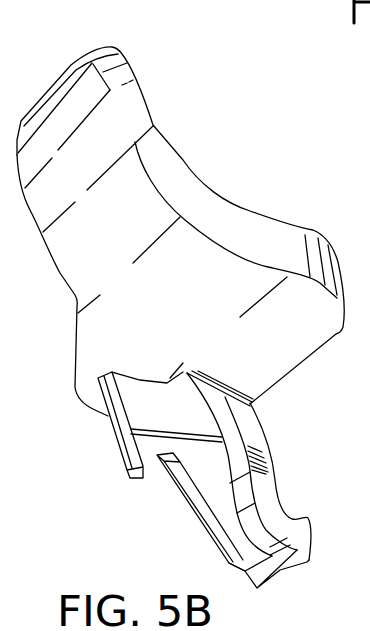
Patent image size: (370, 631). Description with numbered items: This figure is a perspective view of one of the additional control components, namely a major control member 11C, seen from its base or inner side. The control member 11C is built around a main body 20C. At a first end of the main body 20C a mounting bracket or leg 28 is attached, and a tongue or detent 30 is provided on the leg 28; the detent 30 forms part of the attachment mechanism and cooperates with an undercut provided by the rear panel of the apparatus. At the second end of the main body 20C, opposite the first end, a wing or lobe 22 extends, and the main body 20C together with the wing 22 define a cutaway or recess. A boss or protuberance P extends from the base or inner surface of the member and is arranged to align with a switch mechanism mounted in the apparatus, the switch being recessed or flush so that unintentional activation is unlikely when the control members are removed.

The major control member 11C is at (184, 157).
The wing 22 is at (155, 125).
The main body 20C is at (221, 319).
The leg 28 is at (262, 482).
The detent 30 is at (301, 534).
The protuberance P is at (141, 480).